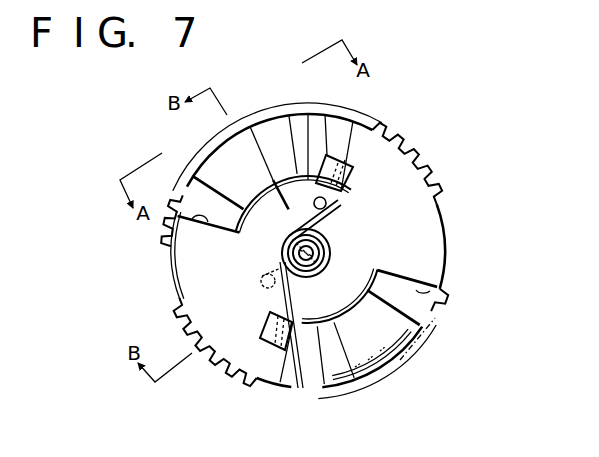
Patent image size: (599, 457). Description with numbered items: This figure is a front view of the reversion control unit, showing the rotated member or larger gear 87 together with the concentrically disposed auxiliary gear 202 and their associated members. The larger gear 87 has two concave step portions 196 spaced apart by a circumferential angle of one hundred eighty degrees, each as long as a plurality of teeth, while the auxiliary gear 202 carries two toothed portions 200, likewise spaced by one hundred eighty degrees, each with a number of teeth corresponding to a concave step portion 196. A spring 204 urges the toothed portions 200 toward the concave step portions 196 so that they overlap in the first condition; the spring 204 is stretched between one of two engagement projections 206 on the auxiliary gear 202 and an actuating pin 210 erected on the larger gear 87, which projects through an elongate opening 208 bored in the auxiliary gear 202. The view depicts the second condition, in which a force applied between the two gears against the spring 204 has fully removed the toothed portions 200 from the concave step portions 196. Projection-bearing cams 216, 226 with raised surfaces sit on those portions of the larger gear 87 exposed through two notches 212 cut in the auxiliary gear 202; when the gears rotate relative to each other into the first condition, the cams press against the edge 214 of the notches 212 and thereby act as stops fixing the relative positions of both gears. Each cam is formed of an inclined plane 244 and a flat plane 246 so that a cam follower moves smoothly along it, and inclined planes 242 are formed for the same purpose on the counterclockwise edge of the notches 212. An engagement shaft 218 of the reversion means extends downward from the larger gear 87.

The larger gear 87 is at (420, 316).
The concave step portion 196 is at (441, 212).
The toothed portion 200 is at (413, 160).
The auxiliary gear 202 is at (176, 290).
The spring 204 is at (332, 216).
The engagement projection 206 is at (345, 158).
The elongate opening 208 is at (284, 193).
The actuating pin 210 is at (344, 203).
The notch 212 is at (413, 296).
The edge of the notch 214 is at (166, 243).
The projection-bearing cam 216 is at (388, 341).
The engagement shaft 218 is at (262, 281).
The projection-bearing cam 226 is at (247, 142).
The inclined plane 242 is at (327, 118).
The inclined plane 244 is at (280, 120).
The flat plane 246 is at (222, 153).